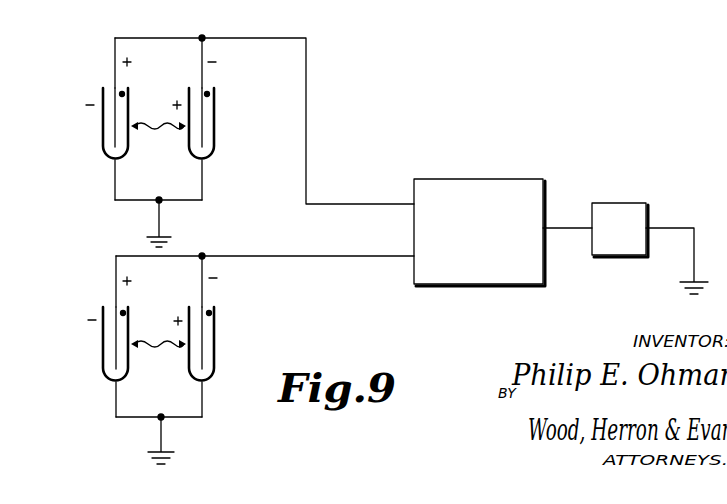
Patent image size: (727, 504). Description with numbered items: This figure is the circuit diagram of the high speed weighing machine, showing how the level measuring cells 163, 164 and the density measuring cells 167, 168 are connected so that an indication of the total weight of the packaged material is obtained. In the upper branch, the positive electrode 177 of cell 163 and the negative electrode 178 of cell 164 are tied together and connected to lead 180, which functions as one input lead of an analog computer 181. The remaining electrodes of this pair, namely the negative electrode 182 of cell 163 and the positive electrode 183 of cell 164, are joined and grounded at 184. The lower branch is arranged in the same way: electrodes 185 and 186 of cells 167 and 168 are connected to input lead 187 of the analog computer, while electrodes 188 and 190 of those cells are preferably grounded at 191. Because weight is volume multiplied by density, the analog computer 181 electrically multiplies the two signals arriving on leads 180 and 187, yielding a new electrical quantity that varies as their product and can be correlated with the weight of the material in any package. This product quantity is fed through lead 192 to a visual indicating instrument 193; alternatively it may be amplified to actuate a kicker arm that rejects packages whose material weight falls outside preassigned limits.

The positive electrode 177 is at (115, 61).
The negative electrode 178 is at (203, 73).
The level measuring cell 163 is at (99, 128).
The level measuring cell 164 is at (218, 118).
The negative electrode 182 is at (102, 155).
The positive electrode 183 is at (215, 150).
The ground 184 is at (159, 220).
The lead 180 is at (306, 125).
The analog computer 181 is at (510, 179).
The input lead 187 is at (313, 256).
The electrode 185 is at (116, 282).
The electrode 186 is at (203, 292).
The density measuring cell 167 is at (99, 343).
The density measuring cell 168 is at (218, 342).
The electrode 188 is at (102, 375).
The electrode 190 is at (215, 370).
The ground 191 is at (161, 440).
The lead 192 is at (568, 228).
The visual indicating instrument 193 is at (646, 210).